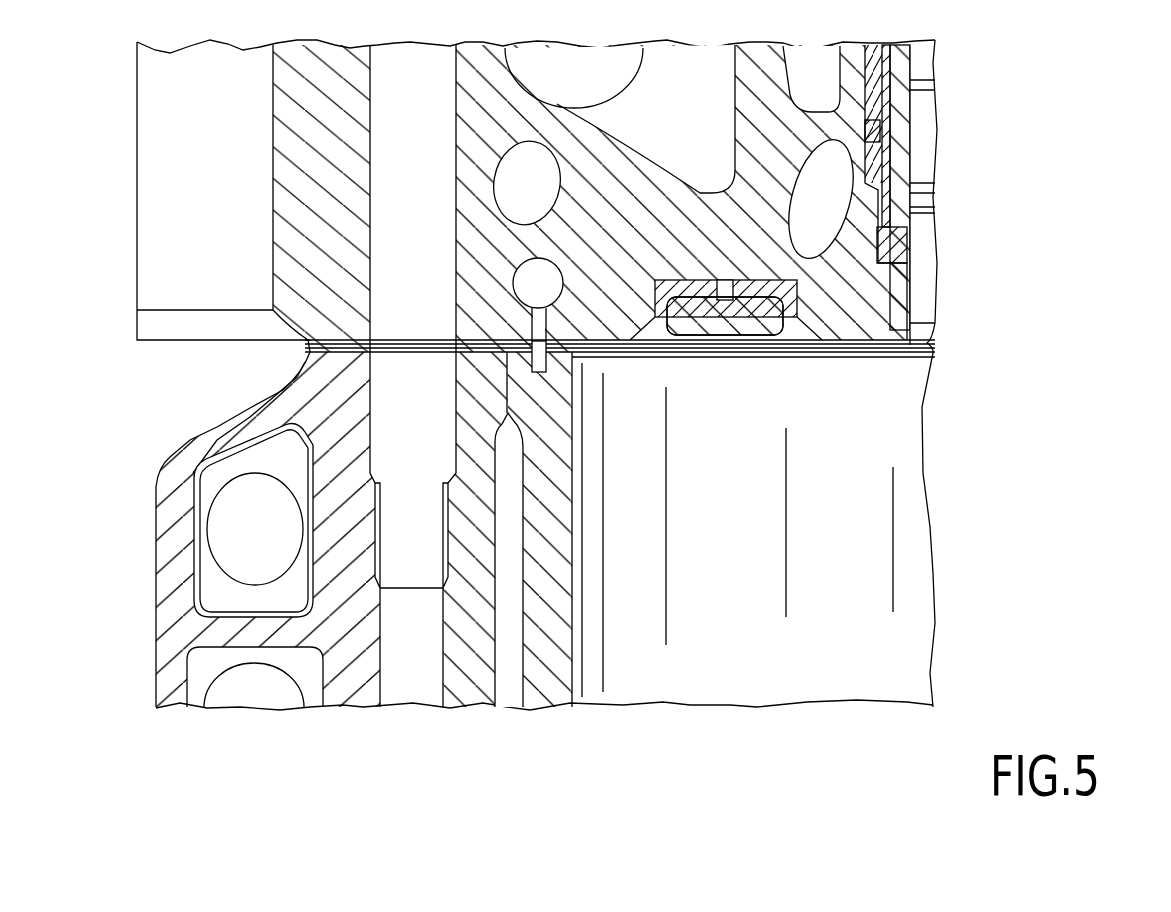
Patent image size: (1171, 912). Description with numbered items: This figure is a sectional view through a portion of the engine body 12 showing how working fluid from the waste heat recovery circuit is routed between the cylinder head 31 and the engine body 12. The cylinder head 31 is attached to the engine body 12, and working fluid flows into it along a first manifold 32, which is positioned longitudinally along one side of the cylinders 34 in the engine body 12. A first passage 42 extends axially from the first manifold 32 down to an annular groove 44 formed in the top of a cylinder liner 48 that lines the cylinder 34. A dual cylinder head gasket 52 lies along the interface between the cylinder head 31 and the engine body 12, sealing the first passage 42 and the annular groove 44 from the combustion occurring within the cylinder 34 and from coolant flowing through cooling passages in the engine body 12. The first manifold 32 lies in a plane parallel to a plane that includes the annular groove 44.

The engine body 12 is at (1027, 103).
The cylinder head 31 is at (138, 152).
The first manifold 32 is at (515, 272).
The cylinder 34 is at (903, 522).
The first passage 42 is at (530, 327).
The annular groove 44 is at (545, 364).
The cylinder liner 48 is at (557, 667).
The dual cylinder head gasket 52 is at (444, 347).